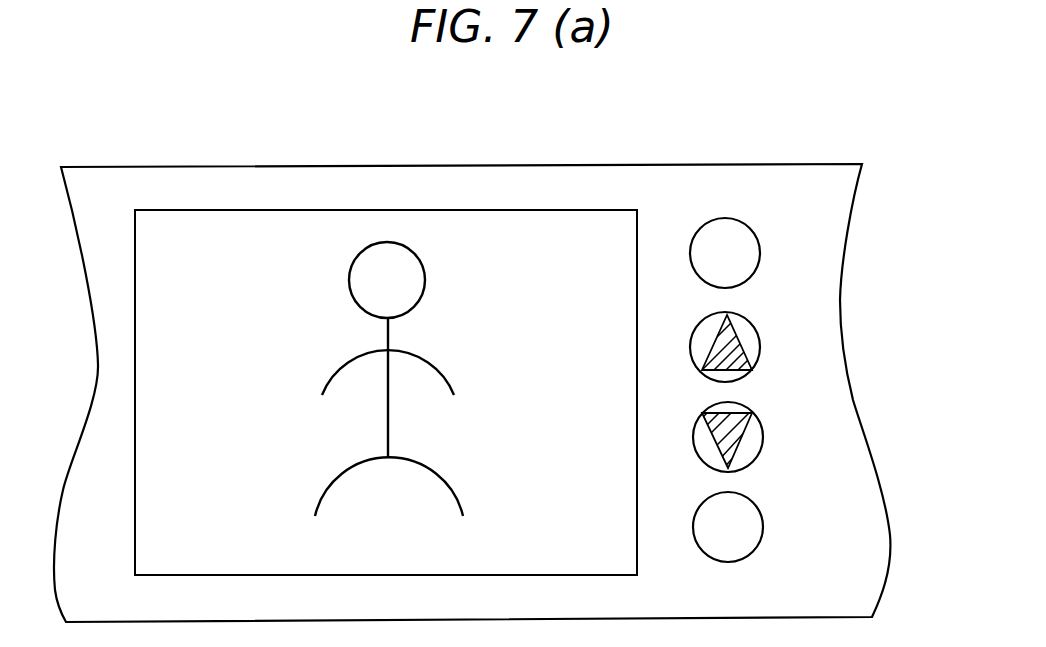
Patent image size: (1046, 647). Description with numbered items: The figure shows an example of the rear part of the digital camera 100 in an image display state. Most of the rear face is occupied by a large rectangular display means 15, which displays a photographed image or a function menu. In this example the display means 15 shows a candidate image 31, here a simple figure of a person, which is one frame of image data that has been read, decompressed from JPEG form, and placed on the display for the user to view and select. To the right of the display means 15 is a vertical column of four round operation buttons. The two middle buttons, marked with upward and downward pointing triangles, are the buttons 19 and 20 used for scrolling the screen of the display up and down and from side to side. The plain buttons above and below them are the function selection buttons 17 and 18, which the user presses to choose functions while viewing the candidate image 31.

The digital camera 100 is at (603, 148).
The display means 15 is at (232, 200).
The candidate image 31 is at (437, 257).
The function selection button 17 is at (761, 252).
The scroll button 19 is at (762, 345).
The scroll button 20 is at (763, 437).
The function selection button 18 is at (763, 527).